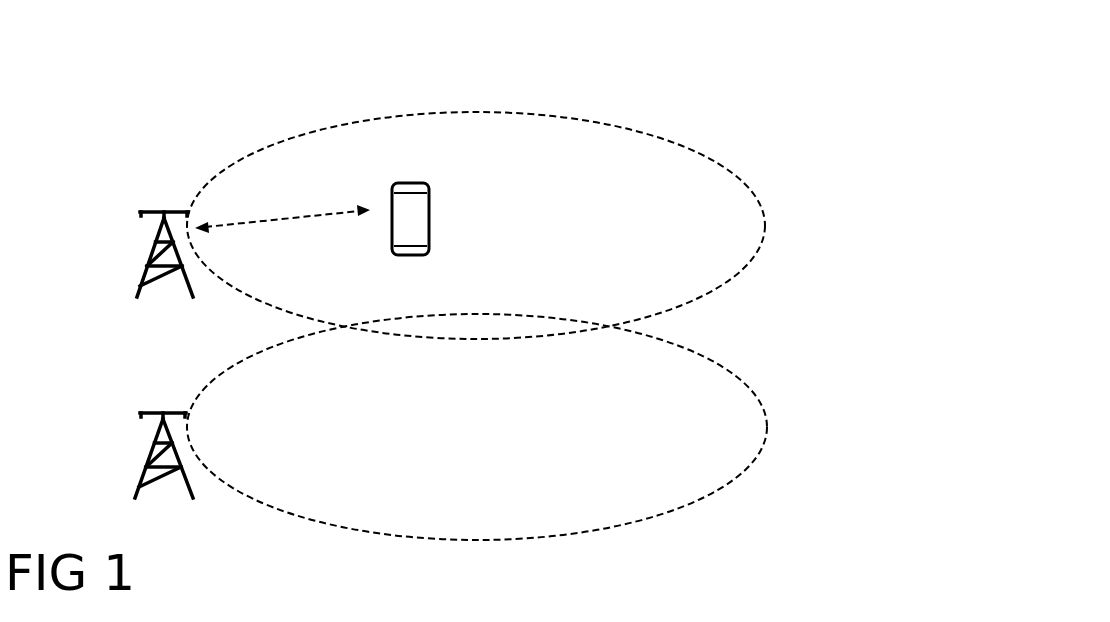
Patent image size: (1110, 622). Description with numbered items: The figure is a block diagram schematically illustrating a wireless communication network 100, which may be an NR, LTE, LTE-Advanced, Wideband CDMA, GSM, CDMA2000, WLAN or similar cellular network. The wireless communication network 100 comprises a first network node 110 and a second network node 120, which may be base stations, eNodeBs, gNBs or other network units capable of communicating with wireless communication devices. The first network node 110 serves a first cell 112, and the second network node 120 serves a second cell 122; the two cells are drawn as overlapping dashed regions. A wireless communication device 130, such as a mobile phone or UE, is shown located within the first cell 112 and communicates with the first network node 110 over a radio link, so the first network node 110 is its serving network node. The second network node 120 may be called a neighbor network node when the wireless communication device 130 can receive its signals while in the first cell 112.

The wireless communication network 100 is at (760, 55).
The first network node 110 is at (143, 272).
The first cell 112 is at (738, 275).
The second network node 120 is at (143, 475).
The second cell 122 is at (762, 405).
The wireless communication device 130 is at (429, 216).